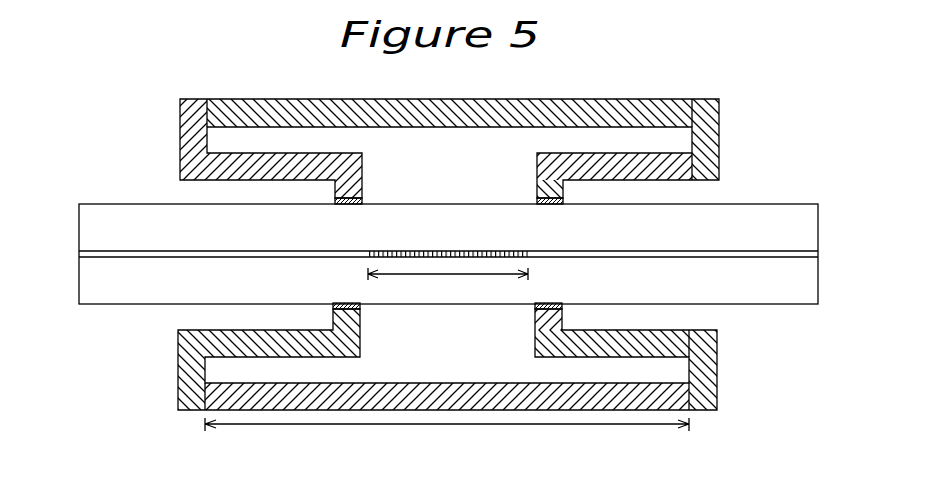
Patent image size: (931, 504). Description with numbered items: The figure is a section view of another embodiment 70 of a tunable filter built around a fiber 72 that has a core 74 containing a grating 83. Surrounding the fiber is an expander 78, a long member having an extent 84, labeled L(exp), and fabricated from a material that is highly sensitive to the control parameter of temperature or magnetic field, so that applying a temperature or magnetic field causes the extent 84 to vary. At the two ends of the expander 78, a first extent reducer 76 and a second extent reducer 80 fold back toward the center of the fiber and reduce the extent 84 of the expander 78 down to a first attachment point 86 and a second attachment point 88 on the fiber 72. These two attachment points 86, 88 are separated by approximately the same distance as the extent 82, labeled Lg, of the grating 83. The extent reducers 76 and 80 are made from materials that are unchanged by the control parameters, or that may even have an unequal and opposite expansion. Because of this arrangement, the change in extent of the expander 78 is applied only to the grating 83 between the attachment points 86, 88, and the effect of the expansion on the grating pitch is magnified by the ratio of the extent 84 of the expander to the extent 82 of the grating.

The tunable filter embodiment 70 is at (120, 137).
The fiber 72 is at (175, 305).
The core 74 is at (110, 244).
The first extent reducer 76 is at (180, 98).
The expander 78 is at (247, 98).
The second extent reducer 80 is at (720, 100).
The extent of the grating 82 is at (448, 275).
The grating 83 is at (497, 251).
The extent of the expander 84 is at (447, 450).
The first attachment point 86 is at (366, 201).
The second attachment point 88 is at (534, 201).